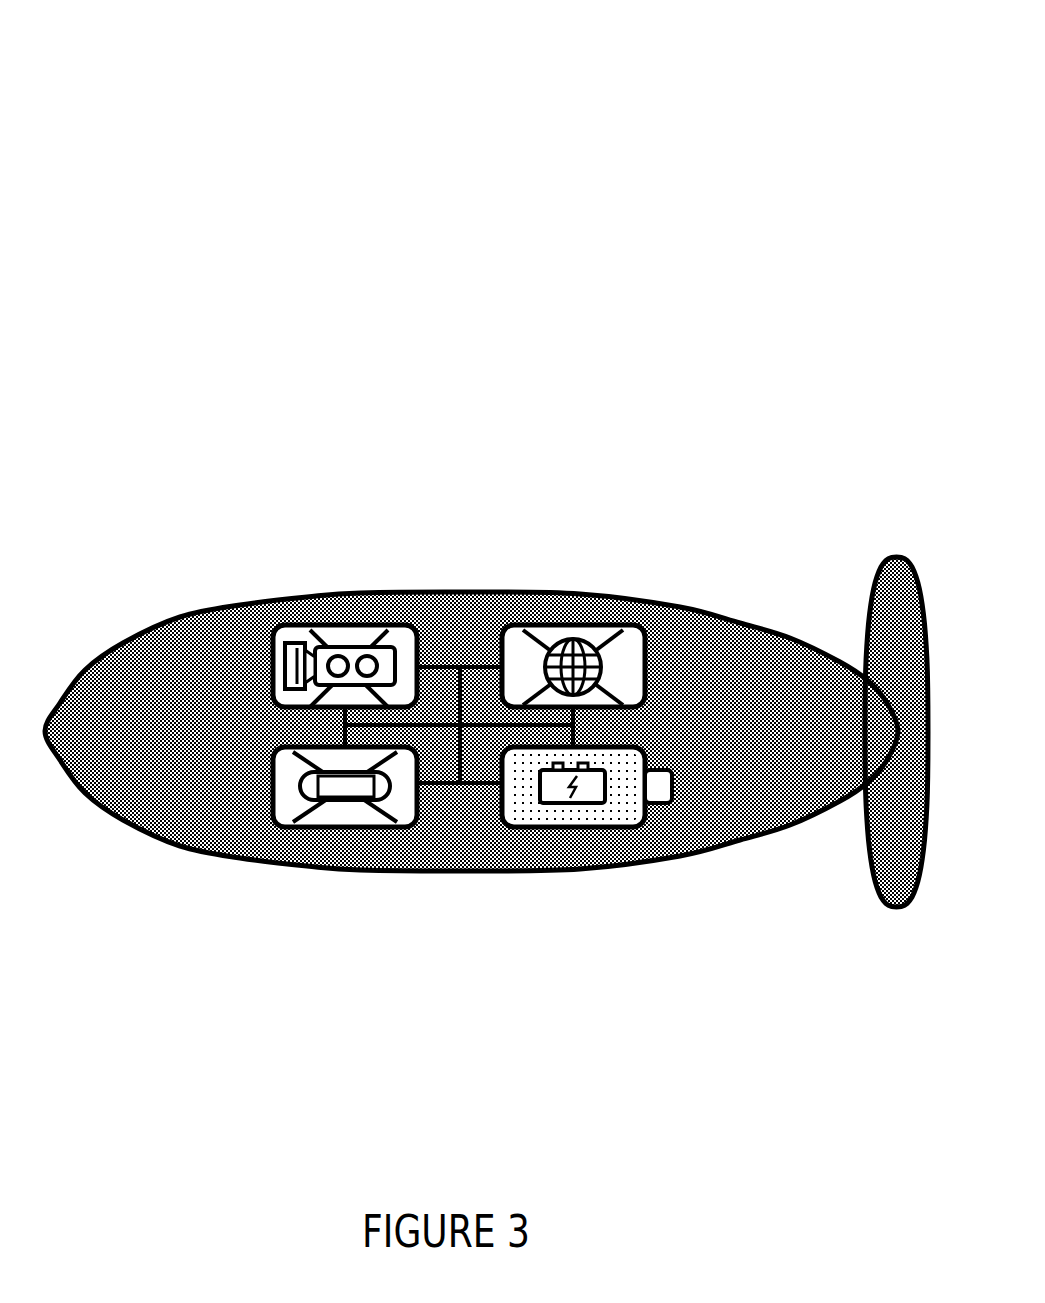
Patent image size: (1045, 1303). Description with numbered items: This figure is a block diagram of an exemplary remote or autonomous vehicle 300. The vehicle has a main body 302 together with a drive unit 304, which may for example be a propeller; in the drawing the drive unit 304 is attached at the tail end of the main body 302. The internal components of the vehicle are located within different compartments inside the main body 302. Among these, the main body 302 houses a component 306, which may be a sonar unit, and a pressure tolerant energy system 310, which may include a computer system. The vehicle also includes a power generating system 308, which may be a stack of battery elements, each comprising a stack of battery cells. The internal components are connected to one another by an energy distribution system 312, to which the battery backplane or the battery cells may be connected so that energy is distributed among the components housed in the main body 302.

The aerial vehicle system 300 is at (130, 69).
The main body 302 is at (704, 538).
The drive unit 304 is at (133, 791).
The component 306 is at (554, 587).
The power generating system 308 is at (521, 851).
The pressure tolerant energy system 310 is at (602, 827).
The energy distribution system 312 is at (445, 822).